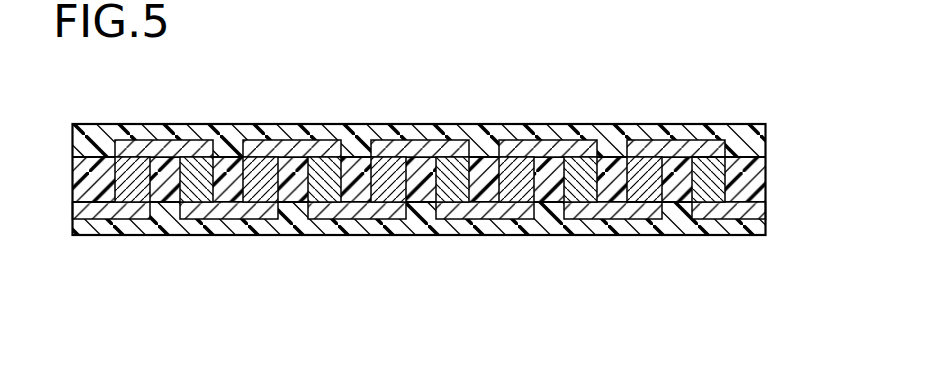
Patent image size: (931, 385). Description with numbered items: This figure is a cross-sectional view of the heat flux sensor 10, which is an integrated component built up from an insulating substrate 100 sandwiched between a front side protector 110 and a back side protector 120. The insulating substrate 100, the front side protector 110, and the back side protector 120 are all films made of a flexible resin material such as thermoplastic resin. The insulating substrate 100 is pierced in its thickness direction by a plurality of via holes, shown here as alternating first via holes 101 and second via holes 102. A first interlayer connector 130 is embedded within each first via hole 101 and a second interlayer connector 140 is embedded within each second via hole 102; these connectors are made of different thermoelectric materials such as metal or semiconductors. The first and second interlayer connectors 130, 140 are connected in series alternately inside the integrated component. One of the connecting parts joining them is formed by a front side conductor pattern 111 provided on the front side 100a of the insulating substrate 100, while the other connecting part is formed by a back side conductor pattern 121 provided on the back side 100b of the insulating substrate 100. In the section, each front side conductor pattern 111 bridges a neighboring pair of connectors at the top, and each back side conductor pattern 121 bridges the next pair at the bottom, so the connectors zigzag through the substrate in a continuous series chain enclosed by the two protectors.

The heat flux sensor 10 is at (302, 98).
The insulating substrate 100 is at (759, 180).
The front side 100a is at (88, 155).
The back side 100b is at (88, 204).
The first via hole 101 is at (647, 185).
The second via hole 102 is at (713, 193).
The front side protector 110 is at (743, 147).
The front side conductor pattern 111 is at (692, 148).
The back side protector 120 is at (750, 231).
The back side conductor pattern 121 is at (595, 218).
The first interlayer connector 130 is at (640, 202).
The second interlayer connector 140 is at (703, 184).